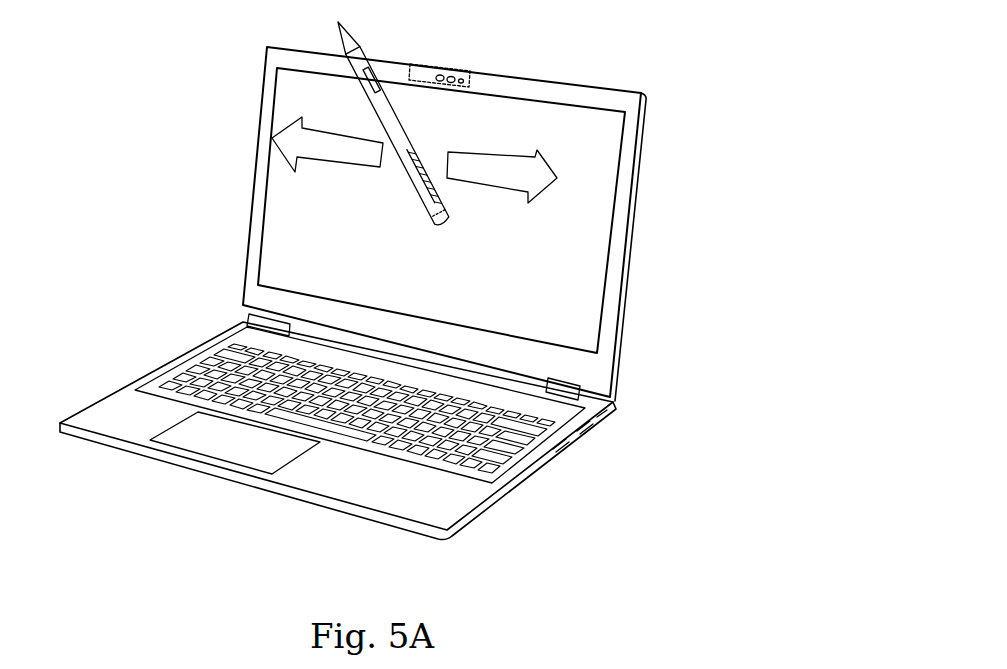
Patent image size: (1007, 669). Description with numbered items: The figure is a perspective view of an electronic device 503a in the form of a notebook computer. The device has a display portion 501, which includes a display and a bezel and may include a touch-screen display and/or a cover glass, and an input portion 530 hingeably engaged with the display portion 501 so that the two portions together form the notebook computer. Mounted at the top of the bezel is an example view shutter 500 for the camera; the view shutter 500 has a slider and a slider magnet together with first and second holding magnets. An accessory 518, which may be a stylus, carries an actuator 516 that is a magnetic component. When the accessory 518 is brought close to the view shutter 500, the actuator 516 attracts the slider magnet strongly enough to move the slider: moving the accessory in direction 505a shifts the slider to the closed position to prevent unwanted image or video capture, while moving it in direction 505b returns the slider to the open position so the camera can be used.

The electronic device 503a is at (130, 83).
The display portion 501 is at (652, 175).
The view shutter 500 is at (464, 97).
The input portion 530 is at (589, 455).
The accessory 518 is at (393, 124).
The actuator 516 is at (376, 69).
The direction 505a is at (512, 177).
The direction 505b is at (362, 152).